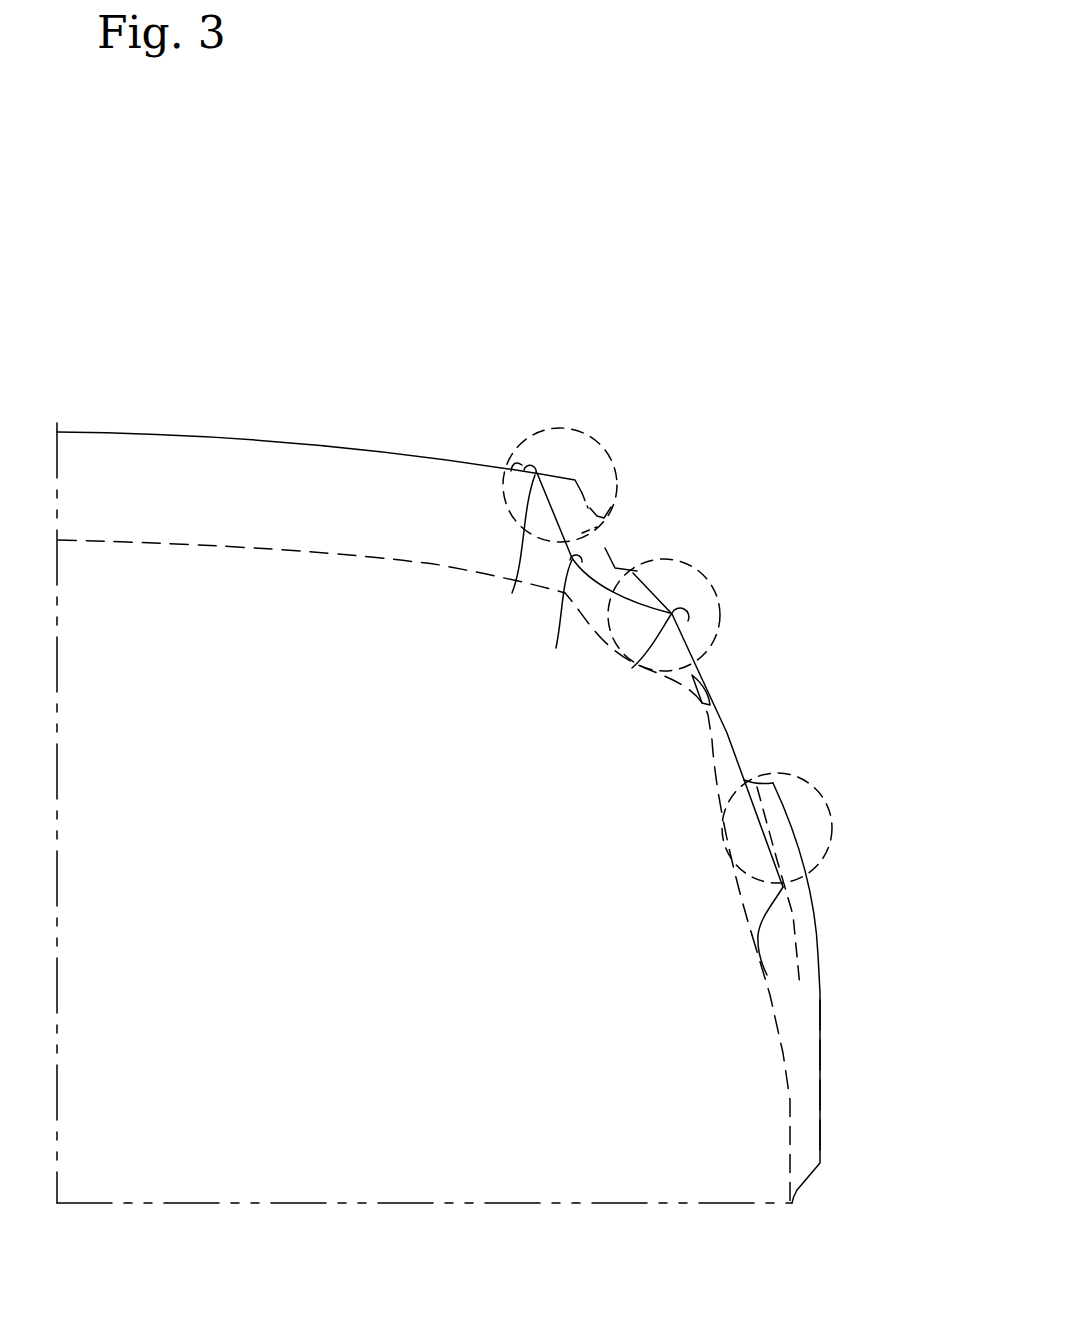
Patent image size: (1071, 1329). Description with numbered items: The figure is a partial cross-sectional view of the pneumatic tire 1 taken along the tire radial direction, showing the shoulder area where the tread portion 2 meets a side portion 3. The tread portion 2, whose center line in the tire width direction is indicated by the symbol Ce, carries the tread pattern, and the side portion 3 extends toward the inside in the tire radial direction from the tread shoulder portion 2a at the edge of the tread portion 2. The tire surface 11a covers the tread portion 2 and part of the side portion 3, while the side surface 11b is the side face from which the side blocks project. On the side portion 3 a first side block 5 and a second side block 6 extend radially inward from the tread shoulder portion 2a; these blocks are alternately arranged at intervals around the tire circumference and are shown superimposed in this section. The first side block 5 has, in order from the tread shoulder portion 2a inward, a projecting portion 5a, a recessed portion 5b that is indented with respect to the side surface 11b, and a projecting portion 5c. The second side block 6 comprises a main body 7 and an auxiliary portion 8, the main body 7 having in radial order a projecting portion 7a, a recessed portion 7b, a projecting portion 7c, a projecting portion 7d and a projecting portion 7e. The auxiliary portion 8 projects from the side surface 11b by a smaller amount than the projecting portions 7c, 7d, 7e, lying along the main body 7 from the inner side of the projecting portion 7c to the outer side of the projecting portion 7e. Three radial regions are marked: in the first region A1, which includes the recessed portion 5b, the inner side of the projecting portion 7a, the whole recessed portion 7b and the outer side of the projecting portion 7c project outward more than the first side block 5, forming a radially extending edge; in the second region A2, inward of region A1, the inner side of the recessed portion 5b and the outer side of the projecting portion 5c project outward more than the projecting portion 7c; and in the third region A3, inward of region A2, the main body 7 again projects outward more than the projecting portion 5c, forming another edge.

The pneumatic tire 1 is at (797, 318).
The tread portion 2 is at (168, 430).
The tread shoulder portion 2a is at (515, 463).
The side portion 3 is at (820, 953).
The first side block 5 is at (557, 515).
The projecting portion 5a is at (515, 550).
The recessed portion 5b is at (561, 620).
The projecting portion 5c is at (632, 668).
The second side block 6 is at (796, 993).
The main body 7 is at (643, 565).
The projecting portion 7a is at (562, 473).
The recessed portion 7b is at (612, 552).
The projecting portion 7c is at (665, 573).
The projecting portion 7d is at (790, 810).
The projecting portion 7e is at (822, 1089).
The auxiliary portion 8 is at (792, 1007).
The tire surface 11a is at (195, 545).
The side surface 11b is at (787, 1103).
The first region A1 is at (553, 428).
The second region A2 is at (723, 603).
The third region A3 is at (847, 822).
The center line Ce is at (55, 453).